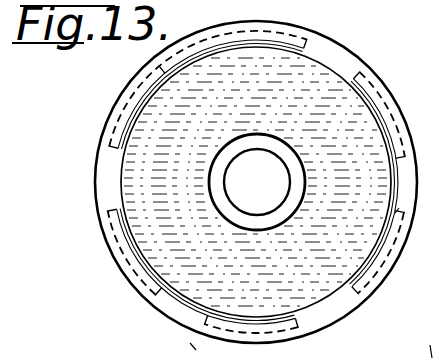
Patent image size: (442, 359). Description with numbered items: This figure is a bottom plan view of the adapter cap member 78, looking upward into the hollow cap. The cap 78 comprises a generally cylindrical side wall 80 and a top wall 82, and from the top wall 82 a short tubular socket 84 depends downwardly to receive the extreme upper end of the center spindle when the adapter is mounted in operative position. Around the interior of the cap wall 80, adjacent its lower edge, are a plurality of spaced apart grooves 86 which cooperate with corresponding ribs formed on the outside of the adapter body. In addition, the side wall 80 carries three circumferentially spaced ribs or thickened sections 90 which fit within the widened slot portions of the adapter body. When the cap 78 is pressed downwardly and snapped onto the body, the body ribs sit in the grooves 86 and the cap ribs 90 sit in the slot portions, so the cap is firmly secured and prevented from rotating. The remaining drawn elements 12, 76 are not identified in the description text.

The wheel assembly 12 is at (416, 352).
The wheel body 76 is at (189, 351).
The rim 78 is at (377, 71).
The retaining ring 80 is at (415, 259).
The disc web 82 is at (226, 106).
The hub 84 is at (299, 186).
The clip tab 86 is at (388, 250).
The spring tabs 90 is at (333, 70).